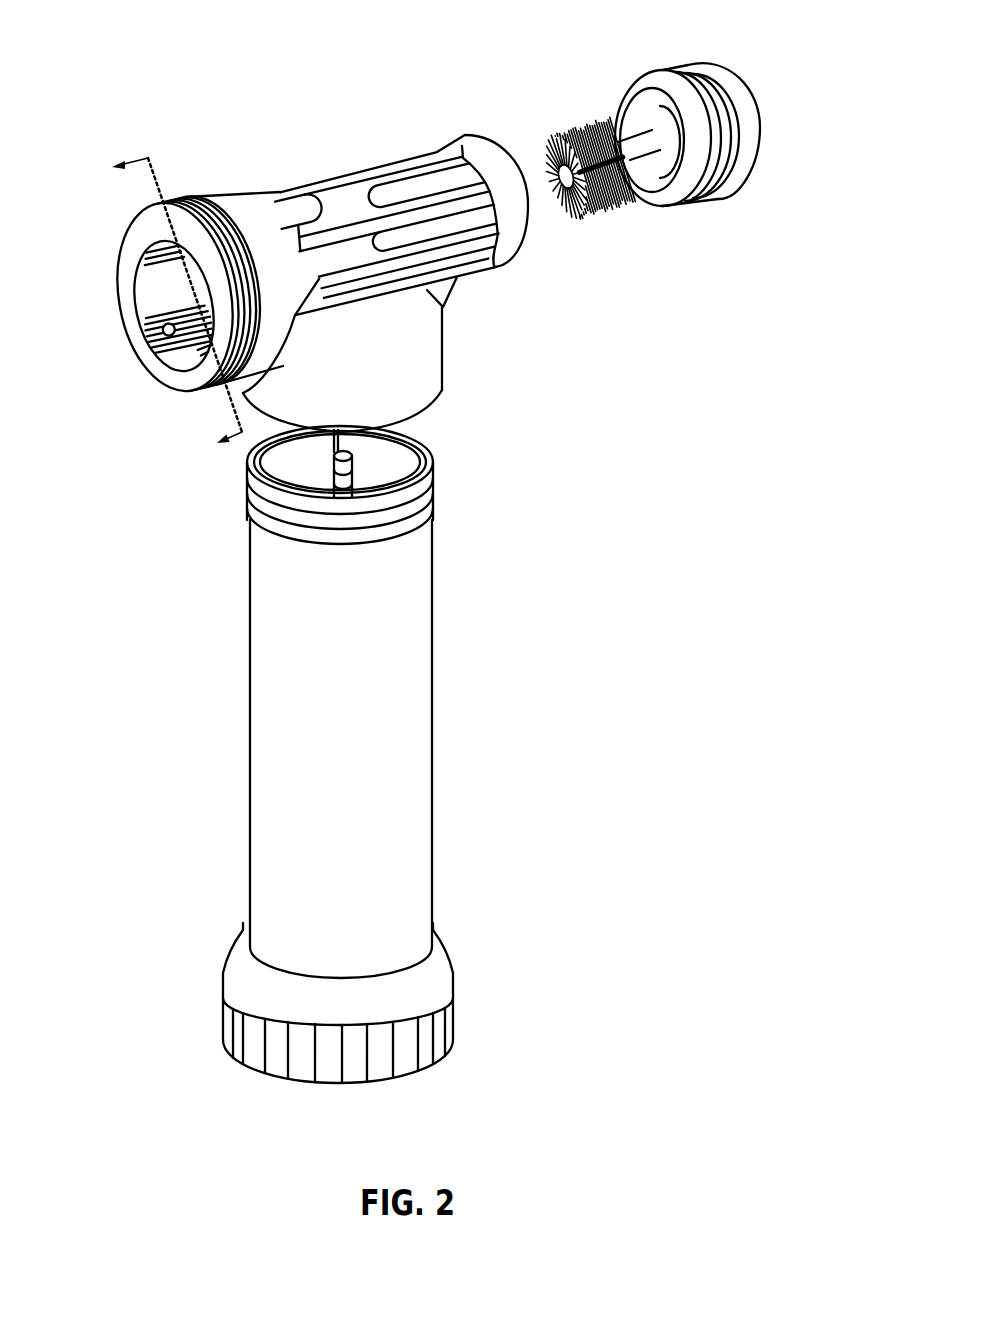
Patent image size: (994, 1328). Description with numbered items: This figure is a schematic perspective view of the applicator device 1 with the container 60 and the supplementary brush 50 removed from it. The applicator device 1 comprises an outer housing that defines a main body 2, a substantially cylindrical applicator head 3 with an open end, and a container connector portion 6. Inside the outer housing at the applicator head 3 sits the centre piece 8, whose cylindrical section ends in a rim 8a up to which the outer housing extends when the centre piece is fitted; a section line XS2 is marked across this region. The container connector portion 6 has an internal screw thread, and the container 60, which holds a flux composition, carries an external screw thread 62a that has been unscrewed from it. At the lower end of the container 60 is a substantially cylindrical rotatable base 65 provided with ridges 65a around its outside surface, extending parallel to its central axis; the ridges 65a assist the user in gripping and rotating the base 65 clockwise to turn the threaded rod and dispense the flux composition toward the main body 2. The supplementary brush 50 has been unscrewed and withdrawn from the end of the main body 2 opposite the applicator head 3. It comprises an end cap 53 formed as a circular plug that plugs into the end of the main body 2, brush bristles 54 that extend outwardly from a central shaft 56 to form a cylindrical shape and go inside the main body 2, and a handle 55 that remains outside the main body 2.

The applicator device 1 is at (388, 165).
The main body 2 is at (333, 190).
The applicator head 3 is at (220, 210).
The container connector portion 6 is at (443, 360).
The centre piece 8 is at (172, 373).
The rim 8a is at (135, 320).
The section line XS2 is at (158, 178).
The supplementary brush 50 is at (590, 90).
The end cap 53 is at (693, 210).
The brush bristles 54 is at (603, 210).
The handle 55 is at (723, 63).
The central shaft 56 is at (640, 155).
The container 60 is at (433, 685).
The external screw thread 62a is at (443, 480).
The rotatable base 65 is at (453, 1008).
The ridges 65a is at (395, 1062).